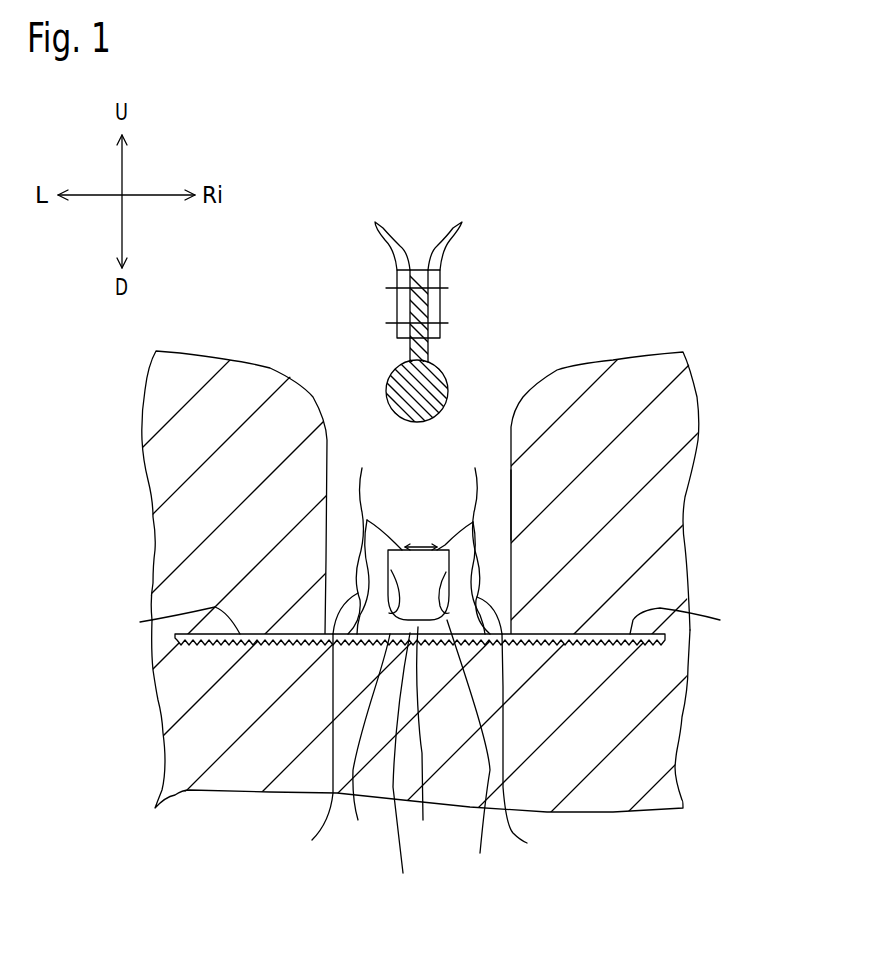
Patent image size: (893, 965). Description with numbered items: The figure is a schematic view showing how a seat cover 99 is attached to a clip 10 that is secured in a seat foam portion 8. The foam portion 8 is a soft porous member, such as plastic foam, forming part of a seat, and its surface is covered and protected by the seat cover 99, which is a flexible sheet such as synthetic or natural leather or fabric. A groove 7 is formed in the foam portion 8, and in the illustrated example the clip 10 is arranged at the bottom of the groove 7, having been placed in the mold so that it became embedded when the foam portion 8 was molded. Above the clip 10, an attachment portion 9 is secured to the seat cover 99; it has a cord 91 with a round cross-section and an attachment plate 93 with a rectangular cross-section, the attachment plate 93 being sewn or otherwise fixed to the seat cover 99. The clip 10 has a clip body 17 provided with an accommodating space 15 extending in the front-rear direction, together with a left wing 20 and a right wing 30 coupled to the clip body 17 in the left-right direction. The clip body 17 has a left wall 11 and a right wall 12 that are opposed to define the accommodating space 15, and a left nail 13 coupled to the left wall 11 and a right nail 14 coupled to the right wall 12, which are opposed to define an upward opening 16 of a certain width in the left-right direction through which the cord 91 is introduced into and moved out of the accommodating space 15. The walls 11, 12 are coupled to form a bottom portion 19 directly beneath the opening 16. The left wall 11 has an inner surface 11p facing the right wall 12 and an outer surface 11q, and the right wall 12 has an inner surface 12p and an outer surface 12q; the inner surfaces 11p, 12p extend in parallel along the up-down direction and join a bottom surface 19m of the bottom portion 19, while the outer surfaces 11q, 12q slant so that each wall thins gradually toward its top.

The groove 7 is at (360, 422).
The seat foam portion 8 is at (614, 493).
The attachment portion 9 is at (432, 337).
The clip 10 is at (342, 575).
The left wall 11 is at (358, 538).
The right wall 12 is at (479, 538).
The left nail 13 is at (392, 538).
The right nail 14 is at (437, 548).
The accommodating space 15 is at (433, 607).
The opening 16 is at (431, 548).
The clip body 17 is at (506, 512).
The bottom portion 19 is at (431, 738).
The bottom surface 19m is at (415, 770).
The inner surface 11p is at (370, 744).
The outer surface 11q is at (319, 733).
The inner surface 12p is at (471, 755).
The outer surface 12q is at (521, 733).
The left wing 20 is at (140, 622).
The right wing 30 is at (720, 620).
The cord 91 is at (445, 370).
The attachment plate 93 is at (412, 307).
The seat cover 99 is at (462, 226).